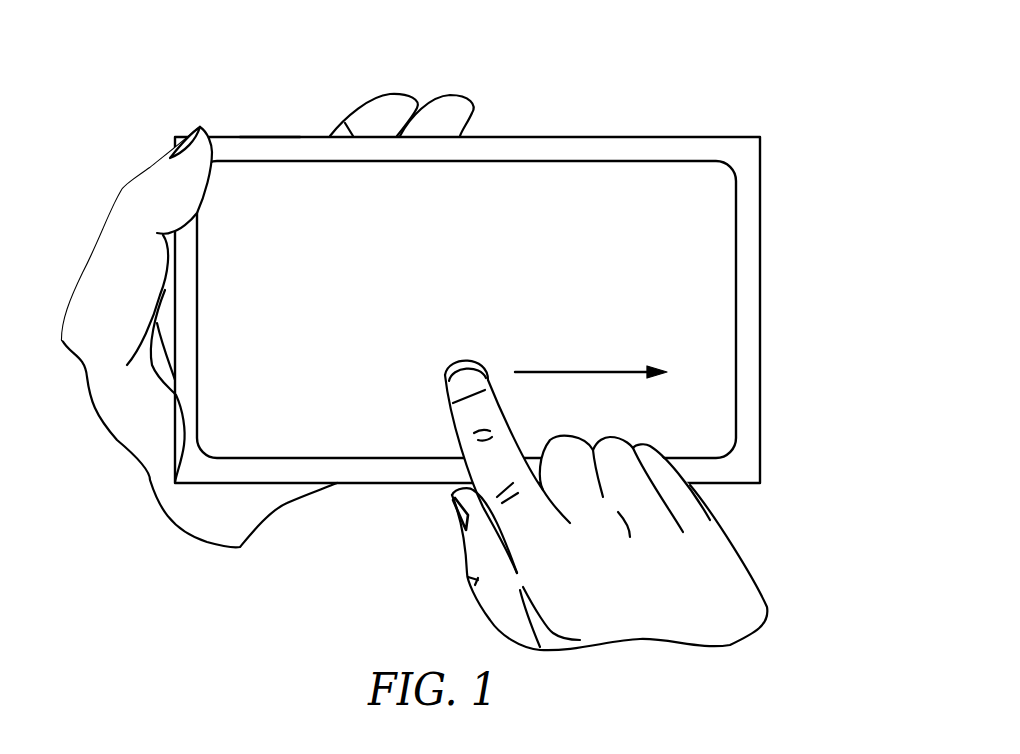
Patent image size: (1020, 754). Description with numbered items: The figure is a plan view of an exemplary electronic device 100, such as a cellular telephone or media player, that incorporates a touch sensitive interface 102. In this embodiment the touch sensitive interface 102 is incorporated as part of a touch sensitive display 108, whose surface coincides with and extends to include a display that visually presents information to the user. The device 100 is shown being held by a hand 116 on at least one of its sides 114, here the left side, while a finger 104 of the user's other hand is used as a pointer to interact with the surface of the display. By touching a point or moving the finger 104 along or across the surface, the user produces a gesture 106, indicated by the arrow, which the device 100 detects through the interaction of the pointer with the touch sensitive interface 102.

The electronic device 100 is at (503, 264).
The touch sensitive interface 102 is at (713, 271).
The finger 104 is at (450, 374).
The gesture 106 is at (590, 368).
The touch sensitive display 108 is at (713, 320).
The side 114 is at (266, 147).
The hand 116 is at (147, 455).